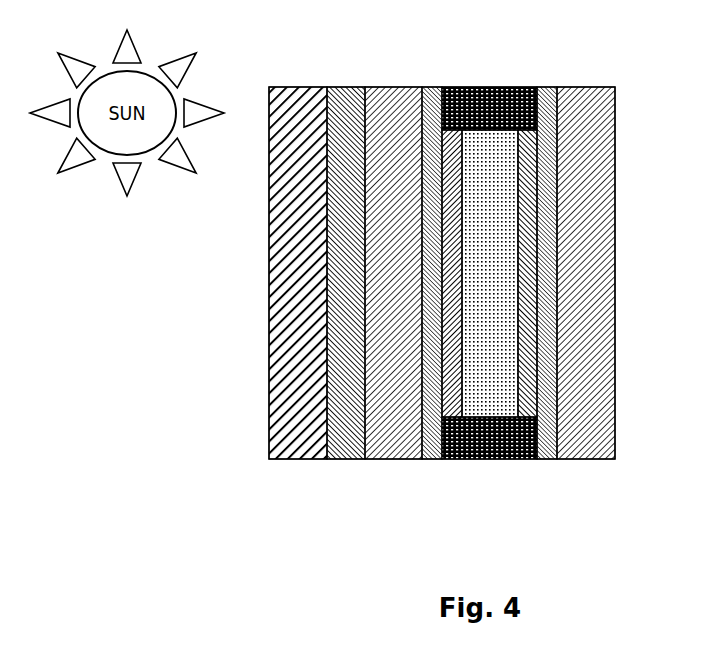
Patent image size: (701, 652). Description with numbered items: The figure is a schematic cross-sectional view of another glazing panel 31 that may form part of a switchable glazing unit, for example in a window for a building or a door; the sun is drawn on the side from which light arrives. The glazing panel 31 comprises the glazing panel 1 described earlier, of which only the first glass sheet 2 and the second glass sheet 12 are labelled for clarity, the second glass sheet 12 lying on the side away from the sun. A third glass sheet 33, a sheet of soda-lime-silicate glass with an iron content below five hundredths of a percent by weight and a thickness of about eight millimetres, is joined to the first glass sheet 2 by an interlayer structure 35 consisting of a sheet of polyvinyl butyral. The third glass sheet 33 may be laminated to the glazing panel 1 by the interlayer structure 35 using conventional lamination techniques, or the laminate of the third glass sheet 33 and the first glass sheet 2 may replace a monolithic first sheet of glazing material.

The glazing panel 1 is at (366, 486).
The first glass sheet 2 is at (384, 110).
The second glass sheet 12 is at (597, 107).
The glazing panel 31 is at (233, 473).
The third glass sheet 33 is at (298, 107).
The interlayer structure 35 is at (342, 108).